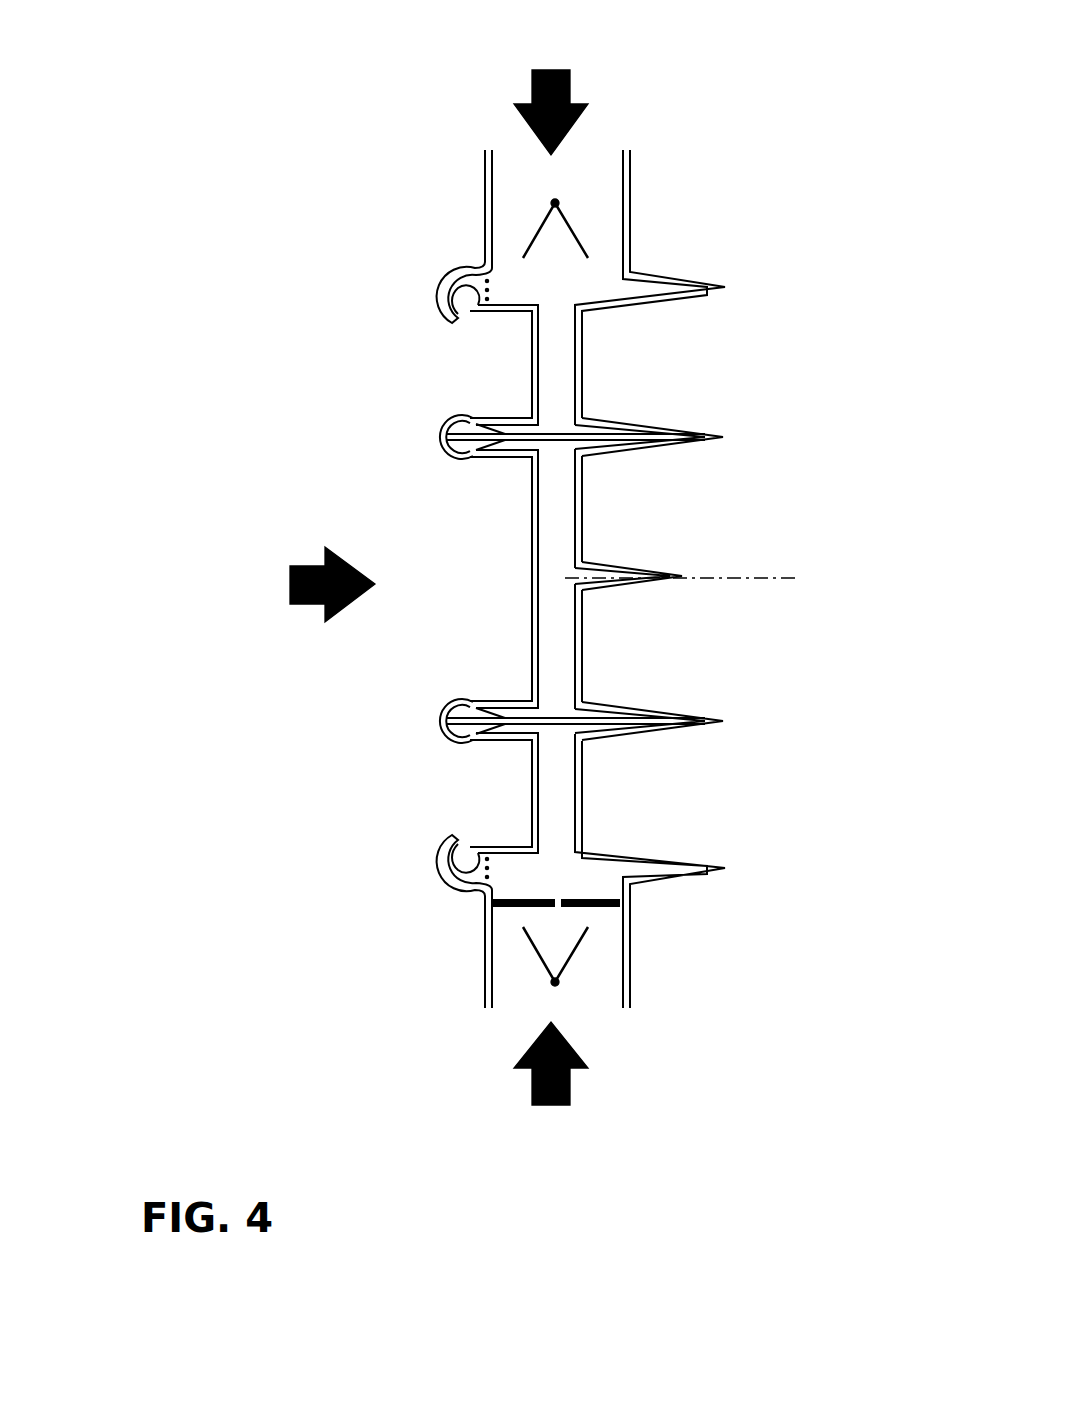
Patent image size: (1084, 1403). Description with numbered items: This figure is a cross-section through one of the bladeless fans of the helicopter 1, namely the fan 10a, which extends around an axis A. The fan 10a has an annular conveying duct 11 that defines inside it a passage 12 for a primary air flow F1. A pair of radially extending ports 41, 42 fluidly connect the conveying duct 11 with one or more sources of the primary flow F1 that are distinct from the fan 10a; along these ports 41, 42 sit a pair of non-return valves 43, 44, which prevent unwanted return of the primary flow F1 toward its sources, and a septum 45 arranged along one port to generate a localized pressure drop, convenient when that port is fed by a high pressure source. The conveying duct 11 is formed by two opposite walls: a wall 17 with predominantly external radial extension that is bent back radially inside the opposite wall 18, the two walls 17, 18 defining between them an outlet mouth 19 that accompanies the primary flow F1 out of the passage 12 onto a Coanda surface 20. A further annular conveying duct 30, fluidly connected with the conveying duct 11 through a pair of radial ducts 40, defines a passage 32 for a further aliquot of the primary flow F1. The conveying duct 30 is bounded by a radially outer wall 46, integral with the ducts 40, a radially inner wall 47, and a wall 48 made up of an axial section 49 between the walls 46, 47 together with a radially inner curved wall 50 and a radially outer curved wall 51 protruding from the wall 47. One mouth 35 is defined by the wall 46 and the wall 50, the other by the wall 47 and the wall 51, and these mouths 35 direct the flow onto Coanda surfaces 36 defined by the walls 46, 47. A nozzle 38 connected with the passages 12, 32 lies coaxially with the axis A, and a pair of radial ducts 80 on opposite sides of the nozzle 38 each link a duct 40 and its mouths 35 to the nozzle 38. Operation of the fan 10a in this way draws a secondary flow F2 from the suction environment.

The helicopter 1 is at (772, 94).
The fan 10a is at (790, 300).
The conveying duct 11 is at (708, 270).
The passage 12 is at (648, 288).
The wall 17 is at (455, 270).
The wall 18 is at (508, 315).
The outlet mouth 19 is at (450, 305).
The Coanda surface 20 is at (468, 322).
The further annular conveying duct 30 is at (738, 432).
The passage 32 is at (557, 447).
The mouths 35 is at (468, 412).
The Coanda surfaces 36 is at (495, 407).
The nozzle 38 is at (678, 565).
The radial ducts 40 is at (563, 348).
The port 41 is at (493, 150).
The port 42 is at (490, 1012).
The non-return valve 43 is at (590, 232).
The non-return valve 44 is at (578, 940).
The septum 45 is at (588, 898).
The radially outer wall 46 is at (668, 432).
The radially inner wall 47 is at (660, 448).
The wall 48 is at (540, 418).
The axial section 49 is at (498, 462).
The wall 50 is at (448, 438).
The wall 51 is at (448, 458).
The radial ducts 80 is at (614, 540).
The primary air flow F1 is at (582, 88).
The secondary flow F2 is at (300, 622).
The axis A is at (780, 580).